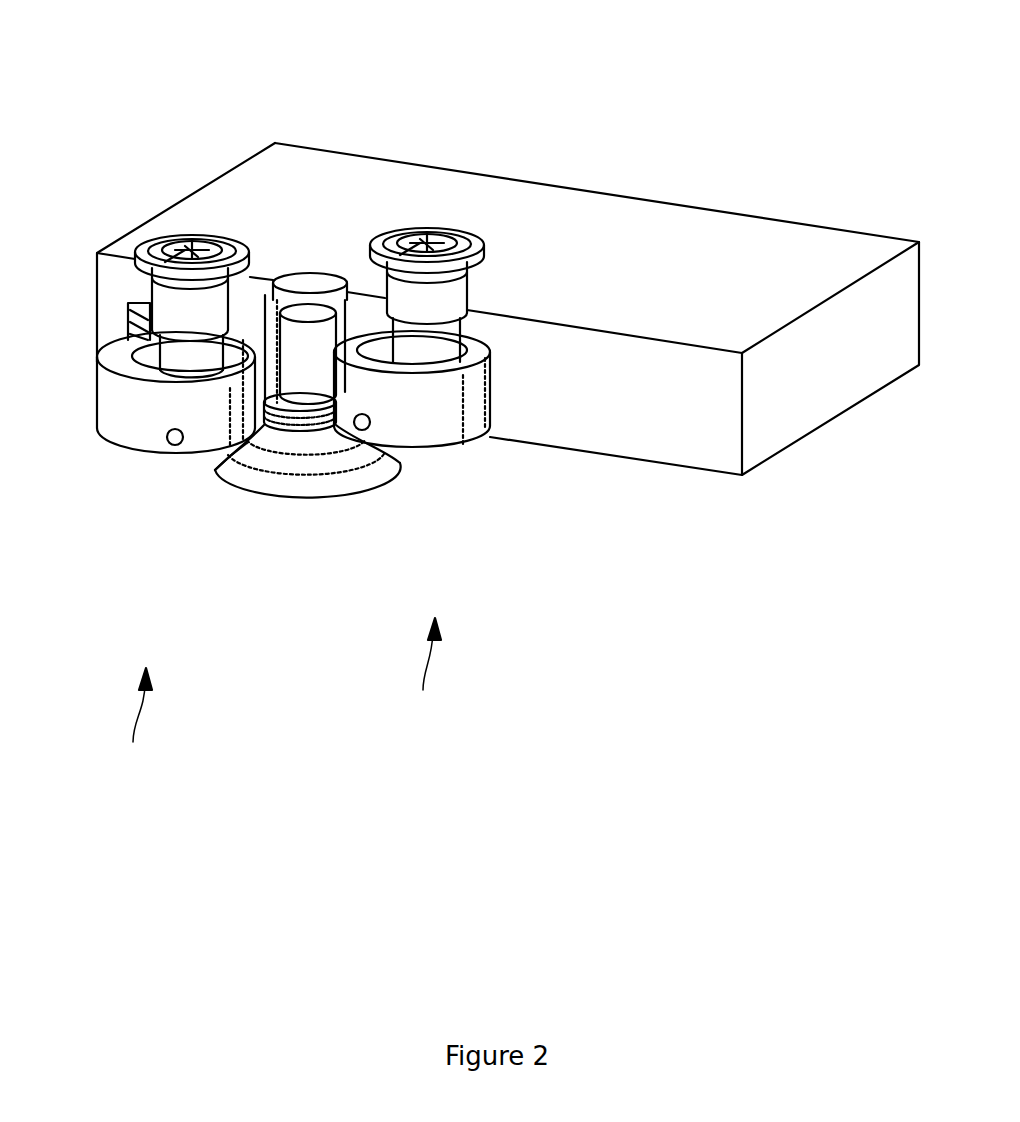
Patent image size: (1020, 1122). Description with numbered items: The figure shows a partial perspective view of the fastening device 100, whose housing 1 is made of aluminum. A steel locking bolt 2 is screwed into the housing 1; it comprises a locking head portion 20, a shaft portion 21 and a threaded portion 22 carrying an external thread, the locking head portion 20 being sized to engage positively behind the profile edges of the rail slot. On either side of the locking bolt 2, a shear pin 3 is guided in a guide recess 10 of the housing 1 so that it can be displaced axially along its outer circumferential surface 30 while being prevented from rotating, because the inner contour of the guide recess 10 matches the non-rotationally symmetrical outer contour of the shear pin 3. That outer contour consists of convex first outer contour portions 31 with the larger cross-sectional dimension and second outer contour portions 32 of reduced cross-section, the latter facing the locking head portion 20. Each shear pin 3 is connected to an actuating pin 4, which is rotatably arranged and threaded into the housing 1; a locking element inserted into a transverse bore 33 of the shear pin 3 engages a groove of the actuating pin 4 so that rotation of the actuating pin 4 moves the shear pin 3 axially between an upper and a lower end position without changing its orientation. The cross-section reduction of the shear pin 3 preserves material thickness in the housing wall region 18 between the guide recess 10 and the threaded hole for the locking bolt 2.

The fastening device 100 is at (158, 104).
The housing 1 is at (636, 220).
The guide recess 10 is at (125, 350).
The locking bolt 2 is at (265, 463).
The shear pin 3 is at (133, 448).
The actuating pin 4 is at (221, 250).
The housing wall region 18 is at (245, 443).
The locking head portion 20 is at (283, 492).
The shaft portion 21 is at (300, 440).
The threaded portion 22 is at (307, 340).
The outer circumferential surface 30 is at (122, 410).
The first outer contour portion 31 is at (118, 375).
The second outer contour portion 32 is at (112, 333).
The transverse bore 33 is at (162, 444).